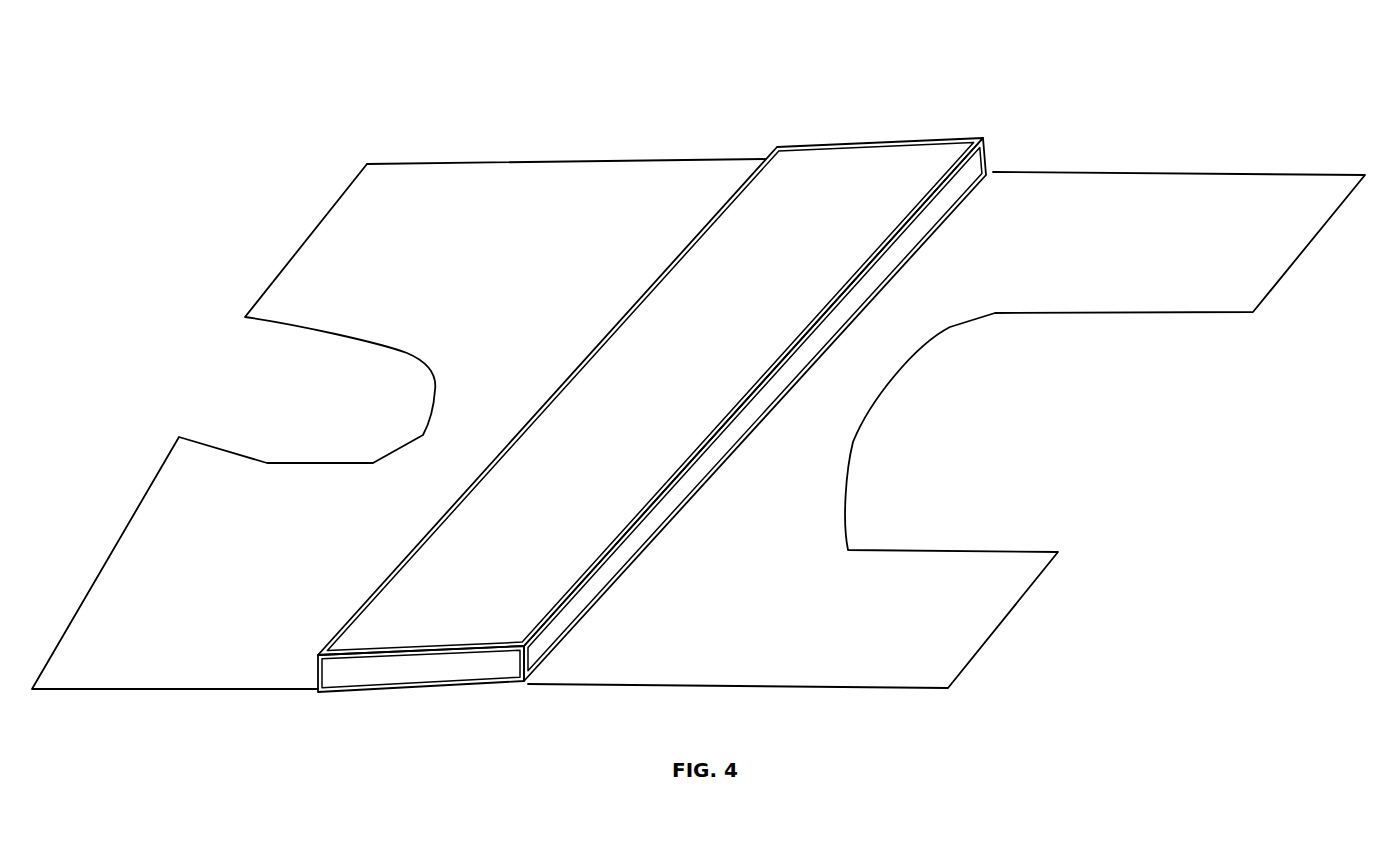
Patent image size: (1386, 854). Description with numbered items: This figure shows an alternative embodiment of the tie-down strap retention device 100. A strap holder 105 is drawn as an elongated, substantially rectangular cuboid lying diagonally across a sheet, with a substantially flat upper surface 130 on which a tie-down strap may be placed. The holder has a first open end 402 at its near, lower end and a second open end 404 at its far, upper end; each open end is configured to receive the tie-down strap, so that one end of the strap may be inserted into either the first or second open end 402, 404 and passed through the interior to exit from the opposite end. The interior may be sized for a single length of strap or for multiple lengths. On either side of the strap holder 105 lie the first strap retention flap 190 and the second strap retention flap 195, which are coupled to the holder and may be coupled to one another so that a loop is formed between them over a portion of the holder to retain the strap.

The tie-down strap retention device 100 is at (350, 132).
The first strap retention flap 190 is at (485, 183).
The second strap retention flap 195 is at (1125, 185).
The strap holder 105 is at (545, 517).
The upper surface 130 is at (415, 573).
The second open end 404 is at (890, 132).
The first open end 402 is at (448, 672).